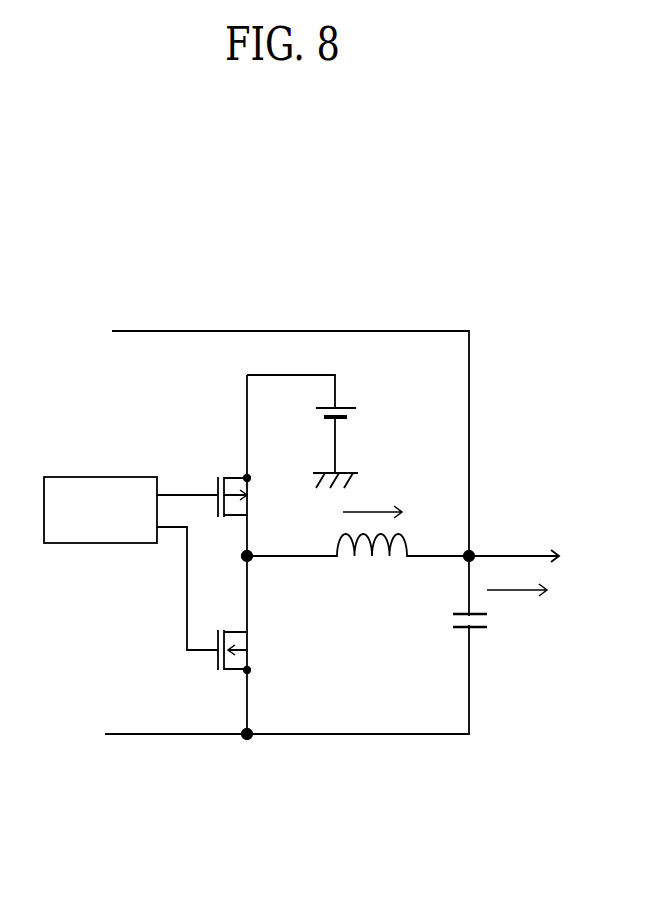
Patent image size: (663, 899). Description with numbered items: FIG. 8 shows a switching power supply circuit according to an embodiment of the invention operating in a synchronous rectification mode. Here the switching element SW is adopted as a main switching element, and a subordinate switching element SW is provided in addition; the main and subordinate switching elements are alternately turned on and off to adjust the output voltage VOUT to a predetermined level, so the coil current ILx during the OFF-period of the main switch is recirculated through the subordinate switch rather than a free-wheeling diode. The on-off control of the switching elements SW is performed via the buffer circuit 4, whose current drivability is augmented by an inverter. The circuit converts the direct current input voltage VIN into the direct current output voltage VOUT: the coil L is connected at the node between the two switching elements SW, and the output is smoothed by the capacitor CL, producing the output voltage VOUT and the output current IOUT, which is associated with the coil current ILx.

The buffer circuit 4 is at (72, 477).
The switching element SW is at (225, 562).
The input voltage VIN is at (317, 431).
The coil L is at (358, 560).
The capacitor CL is at (451, 625).
The output voltage VOUT is at (514, 545).
The output current IOUT is at (517, 610).
The coil current ILx is at (372, 504).